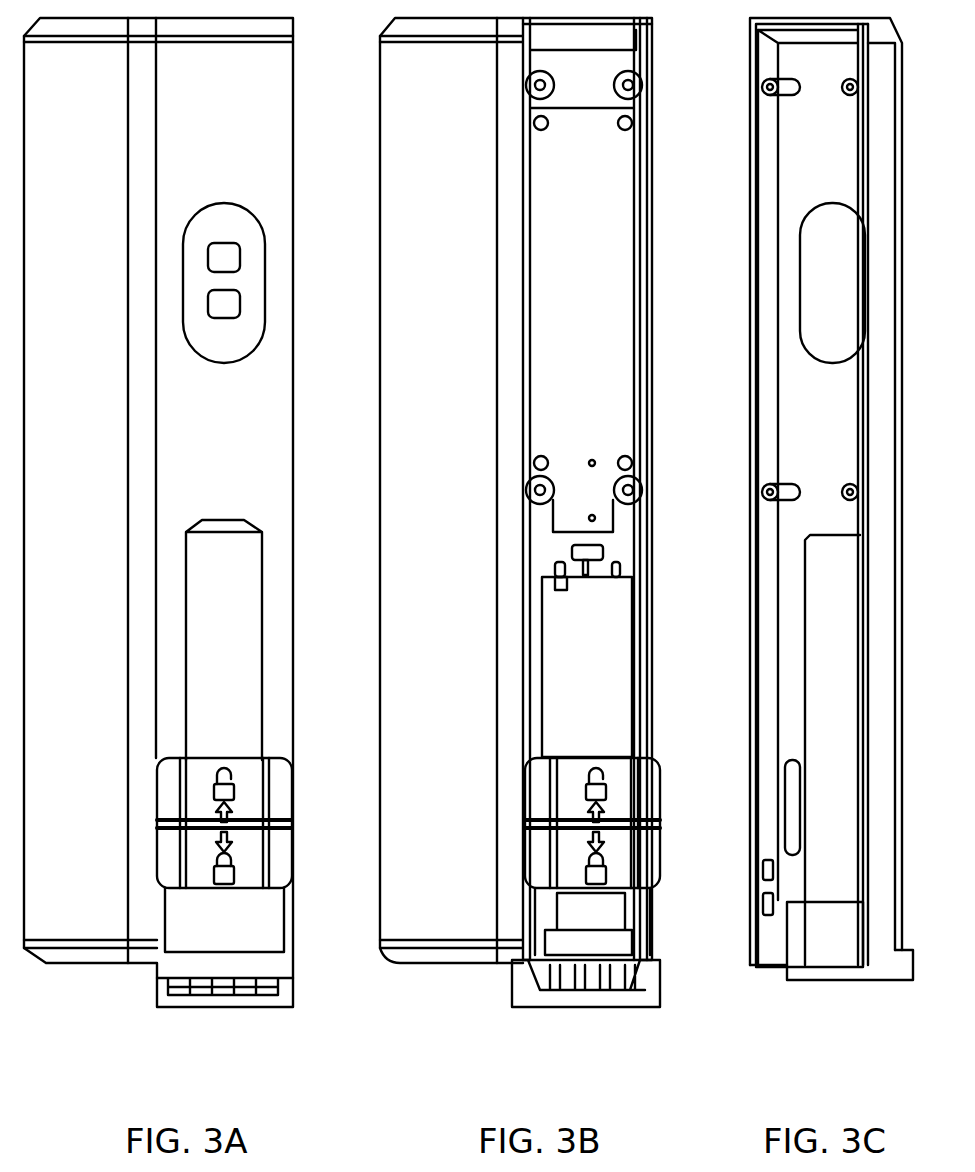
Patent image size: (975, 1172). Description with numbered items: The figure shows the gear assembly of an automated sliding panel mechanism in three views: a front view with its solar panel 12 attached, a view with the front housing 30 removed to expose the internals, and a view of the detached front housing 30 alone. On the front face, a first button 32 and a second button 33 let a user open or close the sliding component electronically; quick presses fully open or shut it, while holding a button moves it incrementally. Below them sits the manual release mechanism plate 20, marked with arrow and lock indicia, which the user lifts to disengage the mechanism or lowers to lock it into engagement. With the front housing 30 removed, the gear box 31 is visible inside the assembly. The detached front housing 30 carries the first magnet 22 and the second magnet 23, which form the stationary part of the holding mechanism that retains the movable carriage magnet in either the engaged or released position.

In FIG. 3A, the solar panel 12 is at (158, 512).
In FIG. 3B, the solar panel 12 is at (427, 743).
In FIG. 3C, the solar panel 12 is at (831, 499).
In FIG. 3A, the manual release mechanism plate 20 is at (224, 823).
In FIG. 3B, the manual release mechanism plate 20 is at (648, 797).
In FIG. 3C, the first magnet 22 is at (760, 868).
In FIG. 3C, the second magnet 23 is at (758, 915).
In FIG. 3B, the front housing 30 is at (586, 947).
In FIG. 3C, the front housing 30 is at (887, 913).
In FIG. 3B, the gear box 31 is at (597, 648).
In FIG. 3C, the gear box 31 is at (832, 750).
In FIG. 3A, the first button 32 is at (232, 252).
In FIG. 3C, the first button 32 is at (810, 87).
In FIG. 3A, the second button 33 is at (232, 298).